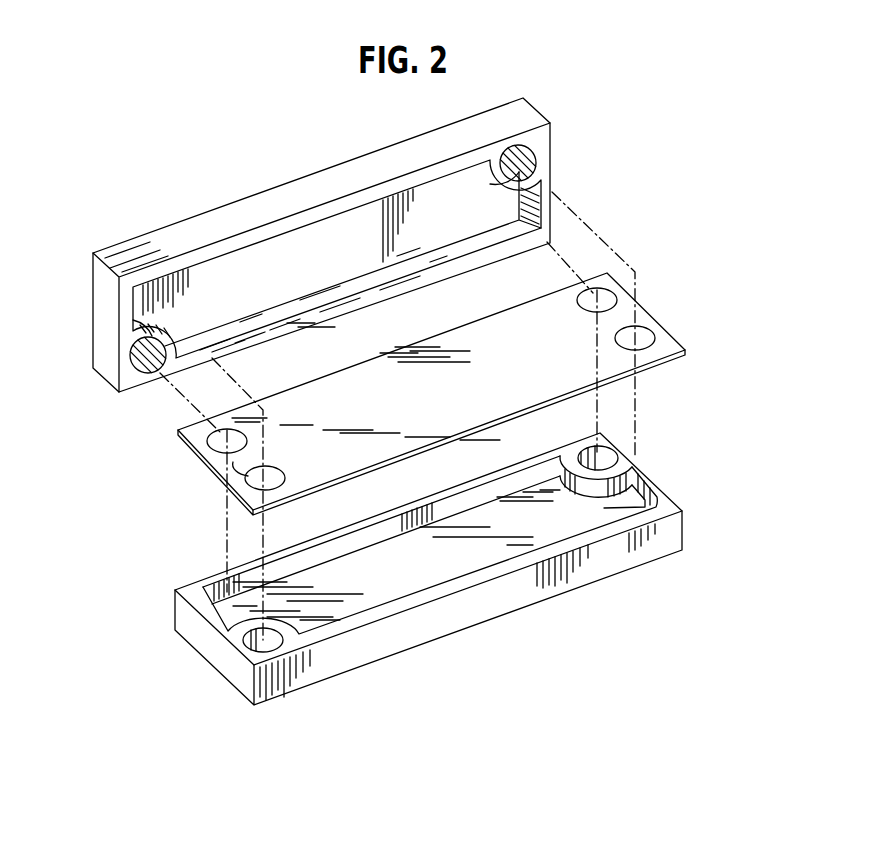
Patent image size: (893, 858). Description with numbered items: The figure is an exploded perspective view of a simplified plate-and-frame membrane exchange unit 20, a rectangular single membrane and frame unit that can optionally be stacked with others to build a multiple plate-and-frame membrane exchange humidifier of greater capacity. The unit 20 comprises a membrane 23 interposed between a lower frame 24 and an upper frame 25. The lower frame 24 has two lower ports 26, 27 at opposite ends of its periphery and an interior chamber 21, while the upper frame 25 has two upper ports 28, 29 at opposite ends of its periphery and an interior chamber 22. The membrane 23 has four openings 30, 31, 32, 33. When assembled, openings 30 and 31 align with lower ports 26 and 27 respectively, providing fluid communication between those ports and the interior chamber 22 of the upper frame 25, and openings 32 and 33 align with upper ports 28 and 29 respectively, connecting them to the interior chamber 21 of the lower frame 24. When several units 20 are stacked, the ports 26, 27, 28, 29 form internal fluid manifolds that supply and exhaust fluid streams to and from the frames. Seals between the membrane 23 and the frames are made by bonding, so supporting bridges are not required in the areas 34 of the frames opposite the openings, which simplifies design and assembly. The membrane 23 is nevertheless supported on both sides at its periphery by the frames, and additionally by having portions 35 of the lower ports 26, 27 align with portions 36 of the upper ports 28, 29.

The membrane and frame unit 20 is at (652, 158).
The interior chamber of lower frame 21 is at (472, 563).
The interior chamber of upper frame 22 is at (418, 200).
The membrane 23 is at (643, 303).
The lower frame 24 is at (688, 529).
The upper frame 25 is at (572, 240).
The lower port 26 is at (236, 657).
The lower port 27 is at (586, 455).
The upper port 28 is at (162, 374).
The upper port 29 is at (542, 165).
The opening 30 is at (232, 465).
The opening 31 is at (588, 302).
The opening 32 is at (218, 443).
The opening 33 is at (648, 345).
The areas opposite openings 34 is at (162, 282).
The portions of lower ports 35 is at (540, 498).
The portions of upper ports 36 is at (121, 341).